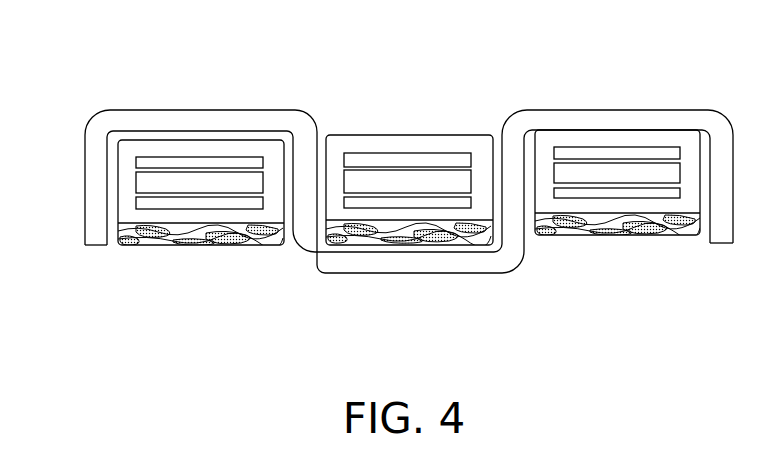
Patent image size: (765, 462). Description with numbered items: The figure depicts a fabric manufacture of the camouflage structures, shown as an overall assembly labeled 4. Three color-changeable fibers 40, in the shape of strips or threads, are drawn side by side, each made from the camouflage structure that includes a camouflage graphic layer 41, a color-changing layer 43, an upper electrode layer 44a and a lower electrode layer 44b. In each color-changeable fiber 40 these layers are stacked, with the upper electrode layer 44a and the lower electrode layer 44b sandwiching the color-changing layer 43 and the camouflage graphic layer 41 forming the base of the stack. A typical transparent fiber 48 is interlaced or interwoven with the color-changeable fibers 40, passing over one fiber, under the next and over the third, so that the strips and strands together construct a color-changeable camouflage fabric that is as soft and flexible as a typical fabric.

The battery module 4 is at (15, 50).
The color-changeable fibers 40 is at (284, 246).
The camouflage graphic layer 41 is at (175, 246).
The color-changing layer 43 is at (242, 177).
The upper electrode layer 44a is at (152, 160).
The lower electrode layer 44b is at (138, 203).
The transparent fibers 48 is at (660, 118).